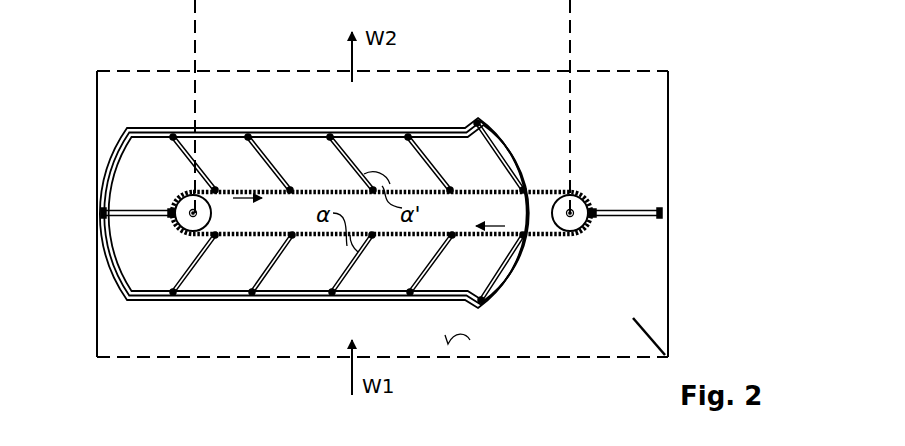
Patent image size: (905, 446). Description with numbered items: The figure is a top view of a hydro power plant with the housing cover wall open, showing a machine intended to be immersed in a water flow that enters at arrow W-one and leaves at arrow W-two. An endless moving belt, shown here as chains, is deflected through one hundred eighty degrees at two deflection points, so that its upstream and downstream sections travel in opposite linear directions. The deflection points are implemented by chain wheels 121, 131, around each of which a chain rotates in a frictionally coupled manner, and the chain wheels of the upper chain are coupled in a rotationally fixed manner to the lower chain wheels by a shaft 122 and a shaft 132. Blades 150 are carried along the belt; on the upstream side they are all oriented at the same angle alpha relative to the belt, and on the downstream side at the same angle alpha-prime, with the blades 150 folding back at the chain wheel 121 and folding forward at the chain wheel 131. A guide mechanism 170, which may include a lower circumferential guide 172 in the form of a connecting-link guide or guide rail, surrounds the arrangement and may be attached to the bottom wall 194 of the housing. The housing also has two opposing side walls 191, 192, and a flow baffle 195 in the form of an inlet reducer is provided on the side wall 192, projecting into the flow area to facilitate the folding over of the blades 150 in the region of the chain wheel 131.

The chain wheel 121 is at (186, 236).
The shaft 122 is at (184, 203).
The chain wheel 131 is at (586, 230).
The shaft 132 is at (578, 207).
The blades 150 is at (181, 135).
The guide mechanism 170 is at (636, 112).
The lower circumferential guide 172 is at (203, 300).
The side wall 191 is at (97, 90).
The side wall 192 is at (668, 118).
The bottom wall 194 is at (470, 340).
The flow baffle 195 is at (645, 357).